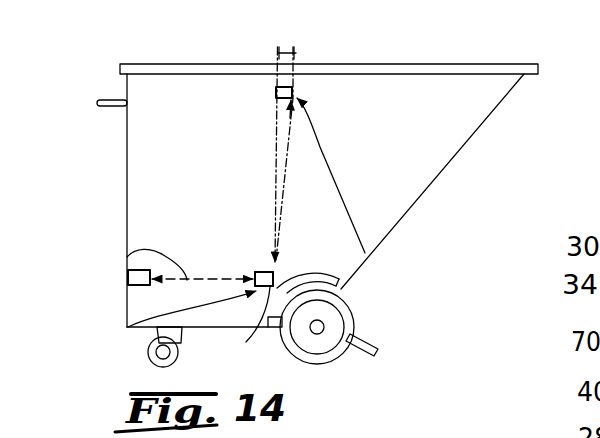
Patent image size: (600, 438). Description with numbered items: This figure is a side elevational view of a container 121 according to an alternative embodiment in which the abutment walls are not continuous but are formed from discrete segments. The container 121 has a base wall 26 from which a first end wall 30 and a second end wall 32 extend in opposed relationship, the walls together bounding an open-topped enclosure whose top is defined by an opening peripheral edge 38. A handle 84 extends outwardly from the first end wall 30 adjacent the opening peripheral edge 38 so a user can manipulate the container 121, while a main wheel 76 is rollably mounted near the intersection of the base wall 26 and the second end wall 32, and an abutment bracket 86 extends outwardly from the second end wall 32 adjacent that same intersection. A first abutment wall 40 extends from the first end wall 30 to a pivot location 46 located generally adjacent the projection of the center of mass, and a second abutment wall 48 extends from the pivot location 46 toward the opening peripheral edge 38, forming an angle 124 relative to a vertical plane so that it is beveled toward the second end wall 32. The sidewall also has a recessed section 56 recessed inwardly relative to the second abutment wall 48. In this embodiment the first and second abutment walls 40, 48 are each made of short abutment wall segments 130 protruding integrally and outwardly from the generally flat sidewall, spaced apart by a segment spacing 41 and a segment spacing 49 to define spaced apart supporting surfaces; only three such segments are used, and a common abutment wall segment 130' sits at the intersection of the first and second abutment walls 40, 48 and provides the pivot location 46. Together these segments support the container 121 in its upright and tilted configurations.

The base wall 26 is at (210, 328).
The first end wall 30 is at (127, 230).
The second end wall 32 is at (447, 173).
The opening peripheral edge 38 is at (476, 66).
The first abutment wall 40 is at (140, 297).
The segment spacing 41 is at (121, 283).
The pivot location 46 is at (256, 335).
The second abutment wall 48 is at (276, 279).
The segment spacing 49 is at (287, 155).
The recessed section 56 is at (434, 125).
The main wheel 76 is at (337, 315).
The handle 84 is at (110, 108).
The abutment bracket 86 is at (383, 352).
The container 121 is at (412, 56).
The angle 124 is at (292, 47).
The abutment wall segment 130 is at (161, 192).
The common abutment wall segment 130' is at (166, 234).